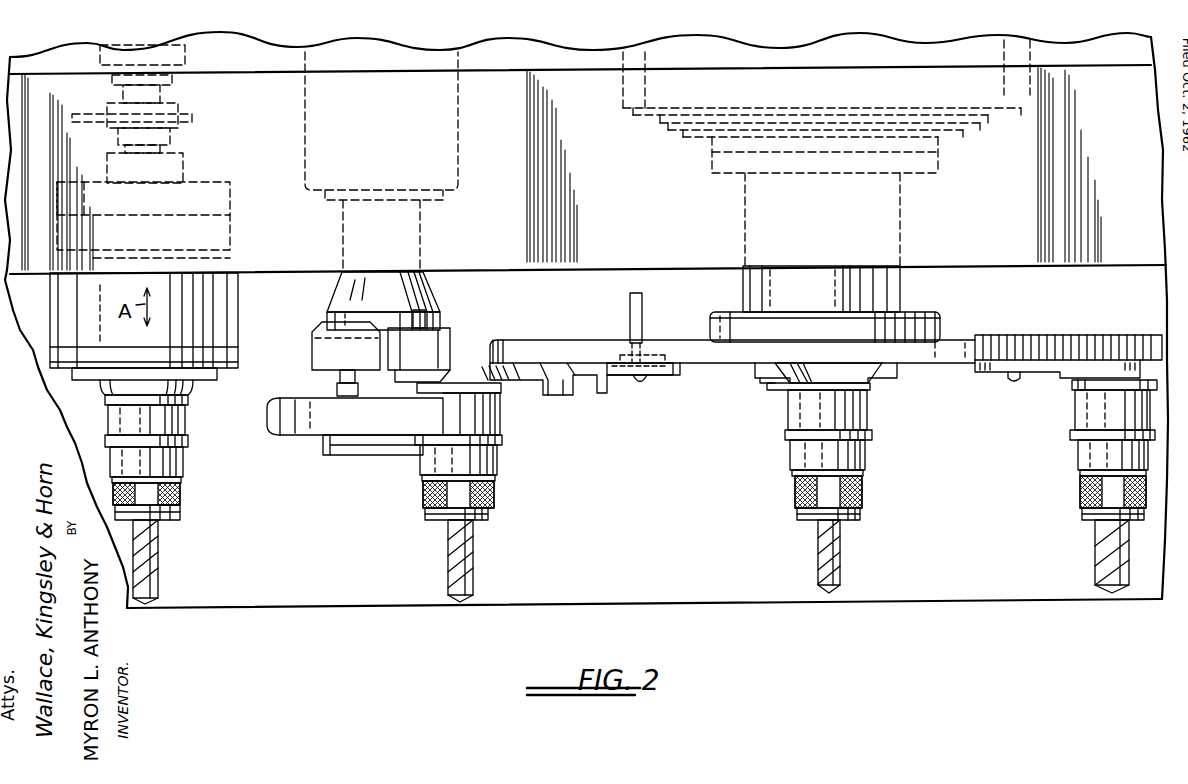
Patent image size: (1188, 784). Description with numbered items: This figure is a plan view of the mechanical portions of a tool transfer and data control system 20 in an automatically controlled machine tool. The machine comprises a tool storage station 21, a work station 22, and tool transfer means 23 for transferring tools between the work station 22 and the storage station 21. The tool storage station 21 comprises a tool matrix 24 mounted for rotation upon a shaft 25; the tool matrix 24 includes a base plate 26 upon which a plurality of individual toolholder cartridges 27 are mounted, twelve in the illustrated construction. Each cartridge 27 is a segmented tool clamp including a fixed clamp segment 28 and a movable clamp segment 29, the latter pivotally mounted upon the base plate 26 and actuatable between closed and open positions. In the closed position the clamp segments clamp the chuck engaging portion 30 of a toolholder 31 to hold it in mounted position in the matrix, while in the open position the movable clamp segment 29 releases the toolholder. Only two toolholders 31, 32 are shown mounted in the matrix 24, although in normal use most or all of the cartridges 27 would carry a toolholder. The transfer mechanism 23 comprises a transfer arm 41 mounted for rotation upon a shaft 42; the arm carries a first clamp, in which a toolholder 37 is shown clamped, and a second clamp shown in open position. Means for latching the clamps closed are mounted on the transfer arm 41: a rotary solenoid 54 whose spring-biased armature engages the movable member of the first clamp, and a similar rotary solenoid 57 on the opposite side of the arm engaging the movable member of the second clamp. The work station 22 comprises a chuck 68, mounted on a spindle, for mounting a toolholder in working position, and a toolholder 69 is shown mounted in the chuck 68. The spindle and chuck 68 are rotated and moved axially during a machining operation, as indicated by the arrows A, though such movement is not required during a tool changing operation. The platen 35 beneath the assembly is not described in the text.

The tool transfer and data control system 20 is at (636, 442).
The tool storage station 21 is at (744, 396).
The work station 22 is at (223, 438).
The tool transfer means 23 is at (356, 473).
The tool matrix 24 is at (932, 353).
The shaft 25 is at (887, 293).
The base plate 26 is at (683, 342).
The toolholder cartridge 27 is at (1038, 368).
The fixed clamp segment 28 is at (878, 376).
The movable clamp segment 29 is at (768, 375).
The chuck engaging portion 30 is at (842, 372).
The toolholder 31 is at (857, 454).
The toolholder 32 is at (1083, 447).
The platen 35 is at (513, 274).
The toolholder 37 is at (487, 462).
The transfer arm 41 is at (318, 425).
The shaft 42 is at (428, 289).
The rotary solenoid 54 is at (450, 340).
The rotary solenoid 57 is at (318, 351).
The chuck 68 is at (213, 323).
The toolholder 69 is at (167, 418).